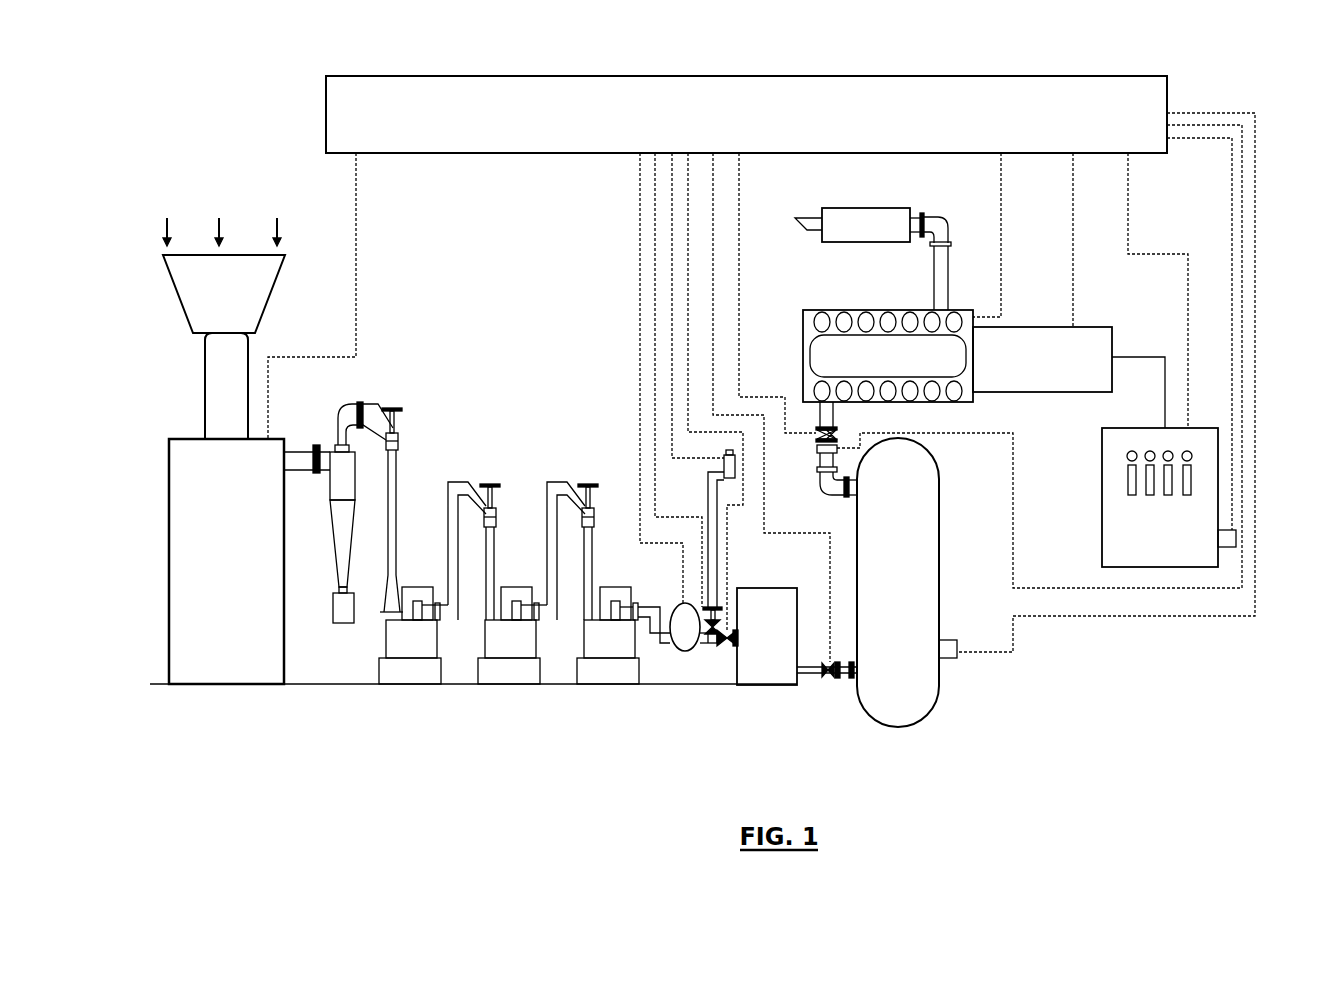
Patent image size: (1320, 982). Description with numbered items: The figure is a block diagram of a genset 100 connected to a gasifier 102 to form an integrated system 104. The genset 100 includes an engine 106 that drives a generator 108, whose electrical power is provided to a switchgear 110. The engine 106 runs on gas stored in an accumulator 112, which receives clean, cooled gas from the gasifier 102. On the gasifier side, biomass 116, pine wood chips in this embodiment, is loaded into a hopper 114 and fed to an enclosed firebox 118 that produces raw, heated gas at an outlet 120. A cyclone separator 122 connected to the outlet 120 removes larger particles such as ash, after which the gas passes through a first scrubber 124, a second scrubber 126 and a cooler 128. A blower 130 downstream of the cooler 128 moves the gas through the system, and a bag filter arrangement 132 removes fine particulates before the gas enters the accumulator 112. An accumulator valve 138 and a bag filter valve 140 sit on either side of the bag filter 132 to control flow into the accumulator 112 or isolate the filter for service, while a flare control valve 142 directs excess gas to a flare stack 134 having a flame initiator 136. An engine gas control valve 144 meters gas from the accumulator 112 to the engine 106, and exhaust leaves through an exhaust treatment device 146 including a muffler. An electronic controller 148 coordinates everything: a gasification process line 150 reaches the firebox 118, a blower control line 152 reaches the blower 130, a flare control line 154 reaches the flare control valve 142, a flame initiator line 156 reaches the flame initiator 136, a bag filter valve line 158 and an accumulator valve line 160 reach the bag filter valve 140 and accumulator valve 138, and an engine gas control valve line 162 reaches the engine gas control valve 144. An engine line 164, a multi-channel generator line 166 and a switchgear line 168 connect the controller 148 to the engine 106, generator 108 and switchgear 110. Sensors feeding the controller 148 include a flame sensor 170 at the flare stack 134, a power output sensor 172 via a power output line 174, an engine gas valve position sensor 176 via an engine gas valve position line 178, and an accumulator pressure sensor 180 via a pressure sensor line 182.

The genset 100 is at (1103, 714).
The gasifier 102 is at (226, 122).
The integrated system 104 is at (333, 757).
The engine 106 is at (874, 365).
The generator 108 is at (1029, 369).
The switchgear 110 is at (1178, 559).
The accumulator 112 is at (884, 595).
The hopper 114 is at (210, 300).
The biomass 116 is at (222, 221).
The enclosed firebox 118 is at (213, 574).
The outlet 120 is at (302, 448).
The cyclone separator 122 is at (333, 533).
The first scrubber 124 is at (397, 652).
The second scrubber 126 is at (496, 652).
The cooler 128 is at (595, 652).
The blower 130 is at (682, 652).
The bag filter arrangement 132 is at (751, 631).
The flare stack 134 is at (708, 498).
The flame initiator 136 is at (735, 465).
The accumulator valve 138 is at (827, 681).
The bag filter valve 140 is at (726, 647).
The flare control valve 142 is at (717, 613).
The engine gas control valve 144 is at (834, 434).
The exhaust treatment device 146 is at (852, 235).
The electronic controller 148 is at (1124, 143).
The gasification process line 150 is at (320, 296).
The blower control line 152 is at (652, 378).
The flare control line 154 is at (671, 380).
The flame initiator line 156 is at (690, 305).
The bag filter valve line 158 is at (710, 391).
The accumulator valve line 160 is at (764, 407).
The engine gas control valve line 162 is at (771, 293).
The engine line 164 is at (994, 235).
The multi-channel generator line 166 is at (1074, 240).
The switchgear line 168 is at (1151, 290).
The flame sensor 170 is at (732, 450).
The power output sensor 172 is at (1230, 540).
The power output line 174 is at (1202, 334).
The engine gas valve position sensor 176 is at (817, 450).
The engine gas valve position line 178 is at (1039, 356).
The accumulator pressure sensor 180 is at (948, 654).
The pressure sensor line 182 is at (1106, 382).